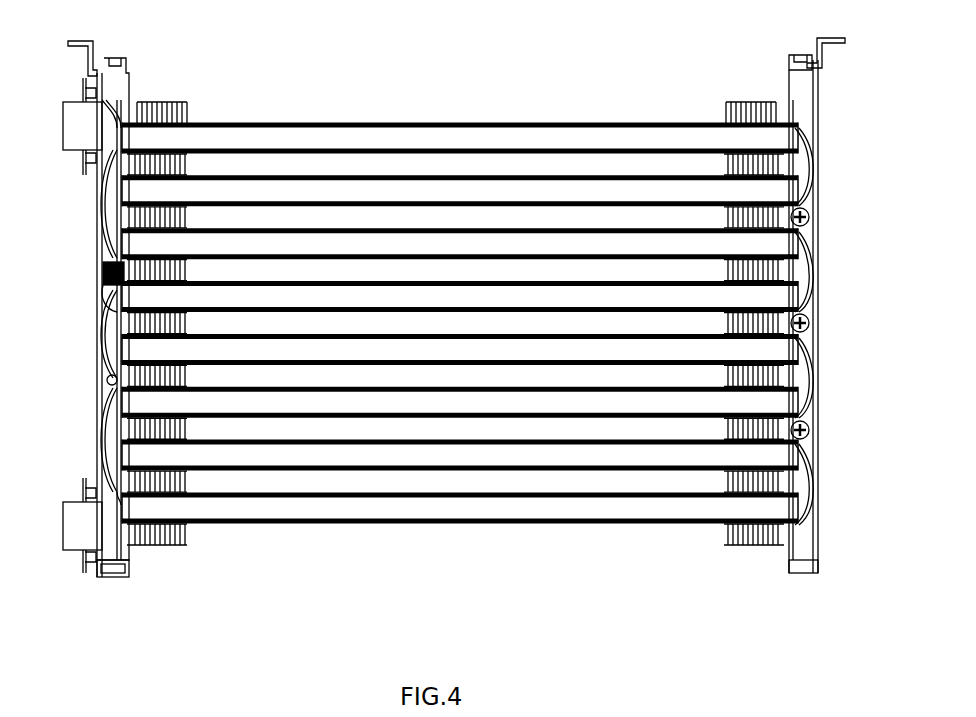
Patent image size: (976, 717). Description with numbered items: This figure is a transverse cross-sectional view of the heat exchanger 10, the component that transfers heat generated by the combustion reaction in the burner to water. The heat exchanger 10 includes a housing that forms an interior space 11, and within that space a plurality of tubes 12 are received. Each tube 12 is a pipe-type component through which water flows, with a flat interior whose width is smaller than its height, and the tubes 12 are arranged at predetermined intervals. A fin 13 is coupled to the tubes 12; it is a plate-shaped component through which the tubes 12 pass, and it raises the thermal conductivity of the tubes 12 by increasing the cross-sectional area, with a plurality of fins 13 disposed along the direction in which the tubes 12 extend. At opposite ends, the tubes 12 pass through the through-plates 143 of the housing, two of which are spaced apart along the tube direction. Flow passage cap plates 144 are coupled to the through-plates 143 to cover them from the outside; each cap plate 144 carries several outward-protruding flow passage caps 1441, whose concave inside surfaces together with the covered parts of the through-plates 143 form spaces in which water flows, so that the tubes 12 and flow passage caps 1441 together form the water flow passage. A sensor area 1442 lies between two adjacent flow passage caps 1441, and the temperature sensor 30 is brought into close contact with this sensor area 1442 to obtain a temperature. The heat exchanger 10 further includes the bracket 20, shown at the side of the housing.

The heat exchanger 10 is at (429, 339).
The interior space 11 is at (314, 486).
The tube 12 is at (333, 523).
The fin 13 is at (172, 548).
The through-plate 143 is at (133, 552).
The flow passage cap plate 144 is at (117, 572).
The flow passage cap 1441 is at (100, 335).
The sensor area 1442 is at (112, 262).
The bracket 20 is at (100, 275).
The temperature sensor 30 is at (100, 290).